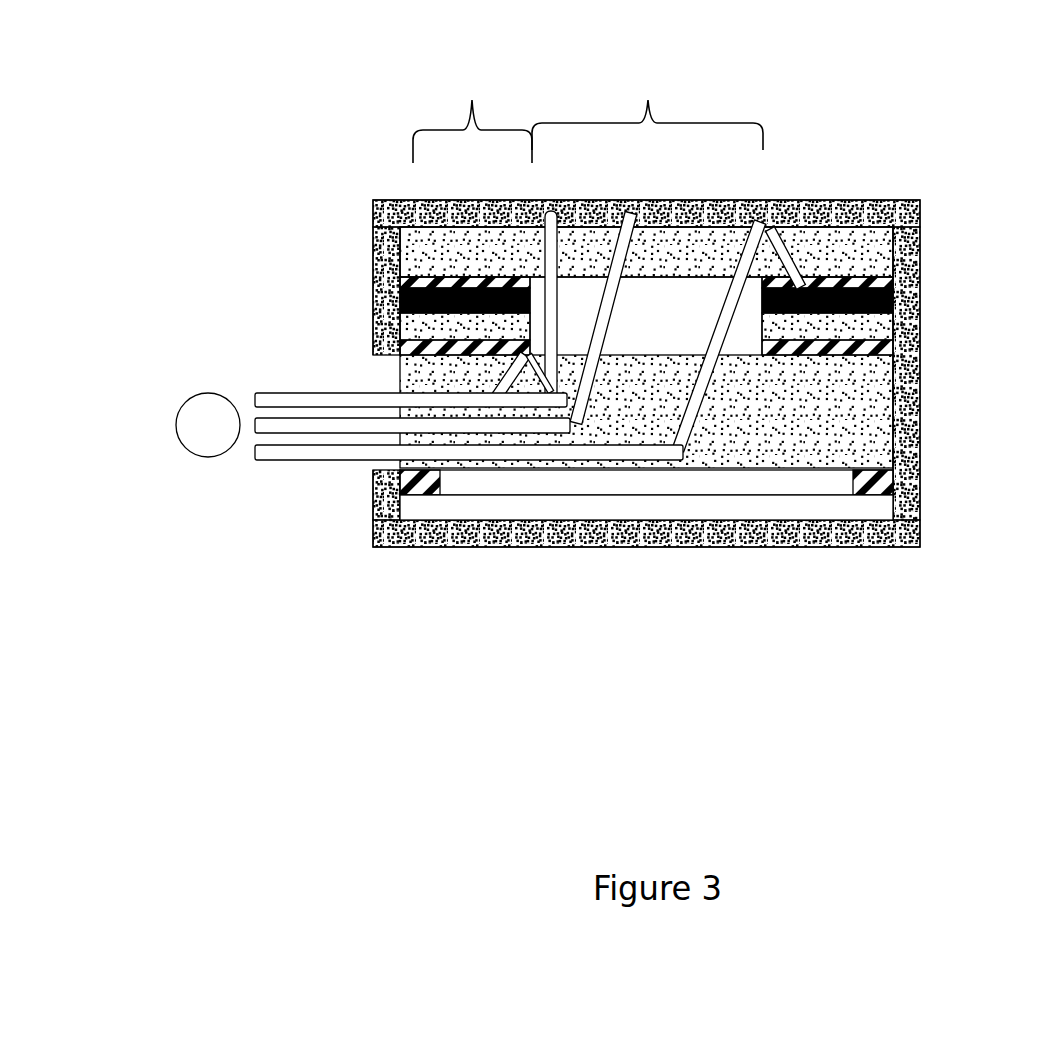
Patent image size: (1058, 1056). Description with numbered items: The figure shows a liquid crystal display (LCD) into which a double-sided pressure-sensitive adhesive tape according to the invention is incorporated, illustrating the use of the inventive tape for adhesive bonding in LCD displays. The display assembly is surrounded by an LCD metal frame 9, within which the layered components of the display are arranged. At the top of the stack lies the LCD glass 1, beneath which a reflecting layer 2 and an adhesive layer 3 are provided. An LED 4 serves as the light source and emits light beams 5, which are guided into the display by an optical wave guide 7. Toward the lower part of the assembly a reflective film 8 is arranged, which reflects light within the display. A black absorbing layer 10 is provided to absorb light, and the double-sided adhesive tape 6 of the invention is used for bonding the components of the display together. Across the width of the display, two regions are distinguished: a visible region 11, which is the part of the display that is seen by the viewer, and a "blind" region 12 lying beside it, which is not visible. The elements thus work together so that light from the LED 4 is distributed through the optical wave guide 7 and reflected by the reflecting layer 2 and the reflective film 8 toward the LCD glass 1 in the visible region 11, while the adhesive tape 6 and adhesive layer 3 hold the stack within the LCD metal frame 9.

The LCD glass 1 is at (477, 252).
The reflecting layer 2 is at (423, 330).
The adhesive layer 3 is at (400, 353).
The LED 4 is at (203, 443).
The light beams 5 is at (320, 462).
The double-sided adhesive tape 6 is at (424, 493).
The optical wave guide 7 is at (607, 430).
The reflective film 8 is at (775, 507).
The LCD metal frame 9 is at (880, 517).
The black absorbing layer 10 is at (875, 287).
The visible region 11 is at (647, 96).
The "blind" region 12 is at (472, 103).